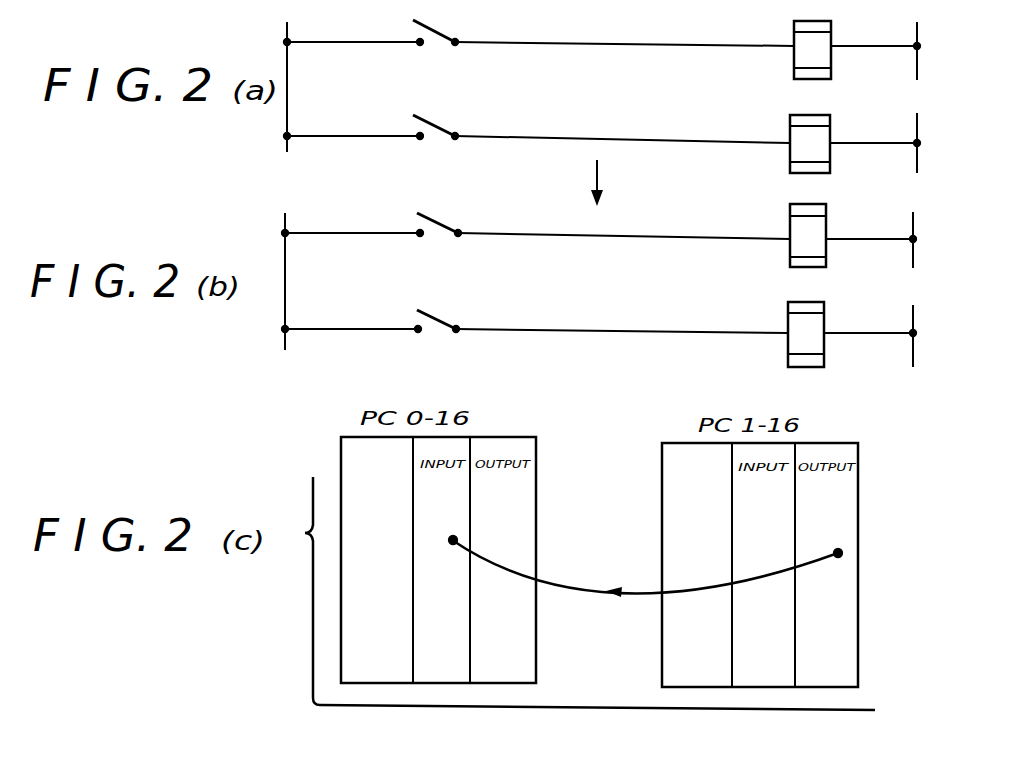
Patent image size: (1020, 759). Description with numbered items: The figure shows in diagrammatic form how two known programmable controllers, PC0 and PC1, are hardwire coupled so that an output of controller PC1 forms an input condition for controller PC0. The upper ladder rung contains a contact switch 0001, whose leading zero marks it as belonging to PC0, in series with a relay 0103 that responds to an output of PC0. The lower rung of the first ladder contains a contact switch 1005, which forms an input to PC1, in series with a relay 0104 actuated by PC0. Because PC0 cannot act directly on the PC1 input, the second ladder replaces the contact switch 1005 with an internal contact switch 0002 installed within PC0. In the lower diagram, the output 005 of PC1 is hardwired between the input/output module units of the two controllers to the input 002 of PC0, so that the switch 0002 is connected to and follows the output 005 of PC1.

In FIG. 2A, the contact switch 0001 is at (435, 47).
In FIG. 2B, the contact switch 0001 is at (440, 240).
In FIG. 2A, the contact switch 1005 is at (436, 142).
In FIG. 2B, the contact switch 0002 is at (436, 336).
In FIG. 2A, the relay 0103 is at (780, 49).
In FIG. 2B, the relay 0103 is at (775, 235).
In FIG. 2A, the relay 0104 is at (779, 144).
In FIG. 2B, the relay 0104 is at (773, 334).
In FIG. 2C, the input of PC0 002 is at (443, 526).
In FIG. 2C, the output of PC1 005 is at (825, 539).